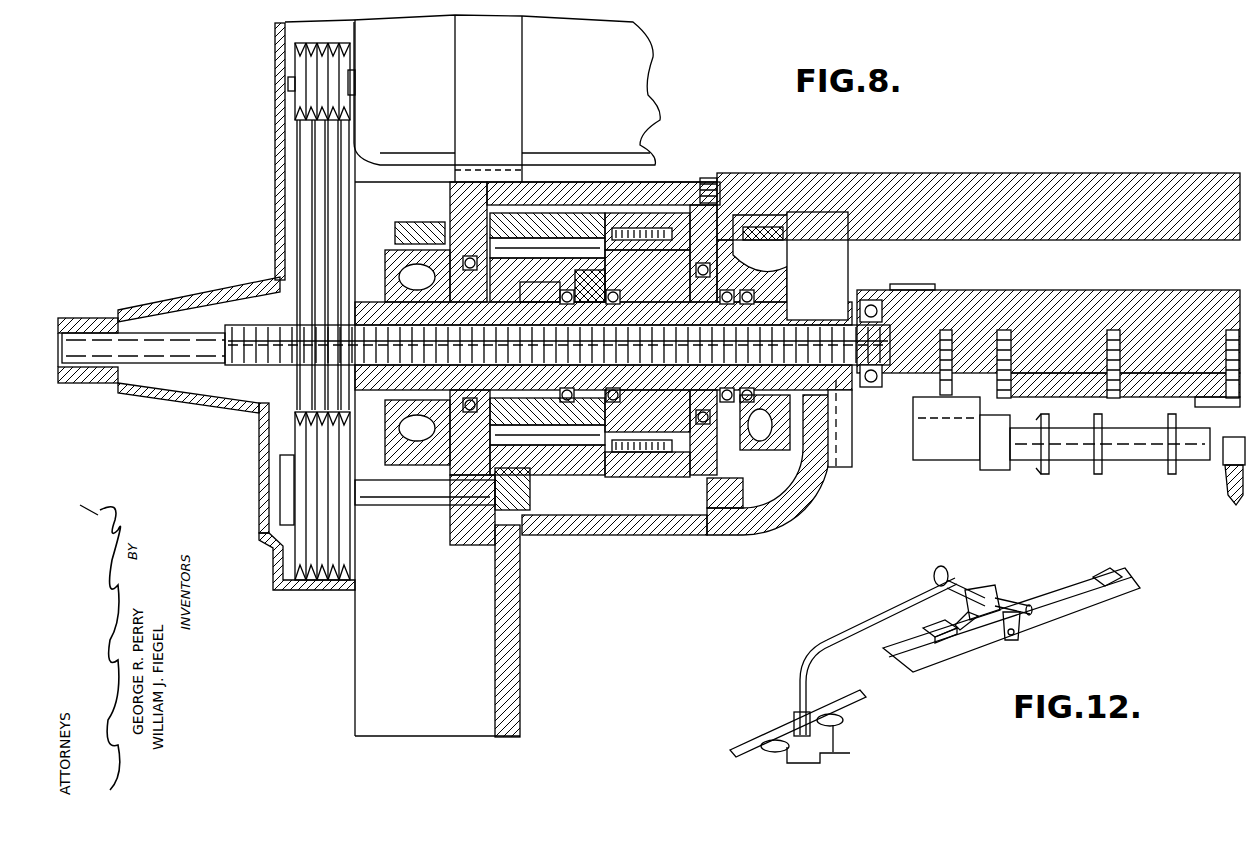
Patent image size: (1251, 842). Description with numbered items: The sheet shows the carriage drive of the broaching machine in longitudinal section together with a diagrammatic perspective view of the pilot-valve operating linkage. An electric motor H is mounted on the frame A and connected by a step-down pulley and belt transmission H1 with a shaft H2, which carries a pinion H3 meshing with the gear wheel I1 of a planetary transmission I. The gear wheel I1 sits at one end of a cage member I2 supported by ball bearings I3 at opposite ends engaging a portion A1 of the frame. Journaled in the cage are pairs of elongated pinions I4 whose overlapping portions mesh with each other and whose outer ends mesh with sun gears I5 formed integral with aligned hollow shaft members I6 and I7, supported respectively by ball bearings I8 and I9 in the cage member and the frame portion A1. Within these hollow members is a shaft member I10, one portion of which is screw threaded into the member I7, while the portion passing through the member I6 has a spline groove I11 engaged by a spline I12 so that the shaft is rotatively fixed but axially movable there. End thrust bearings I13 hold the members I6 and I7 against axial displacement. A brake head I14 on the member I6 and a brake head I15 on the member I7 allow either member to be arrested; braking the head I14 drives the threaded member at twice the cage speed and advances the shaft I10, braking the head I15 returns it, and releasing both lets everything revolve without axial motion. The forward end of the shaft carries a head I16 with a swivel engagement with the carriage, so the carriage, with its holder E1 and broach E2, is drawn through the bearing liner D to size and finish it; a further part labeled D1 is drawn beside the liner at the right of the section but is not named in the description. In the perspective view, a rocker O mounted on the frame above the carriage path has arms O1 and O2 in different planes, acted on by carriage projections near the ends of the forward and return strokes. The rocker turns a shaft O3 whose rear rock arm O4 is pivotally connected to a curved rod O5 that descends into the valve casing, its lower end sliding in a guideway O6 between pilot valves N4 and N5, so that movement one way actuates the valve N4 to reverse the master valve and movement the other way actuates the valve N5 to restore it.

In FIG. 8, the electric motor H is at (642, 92).
In FIG. 8, the step-down pulley and belt transmission H1 is at (284, 438).
In FIG. 8, the shaft H2 is at (420, 505).
In FIG. 8, the pinion H3 is at (532, 490).
In FIG. 8, the frame A is at (505, 735).
In FIG. 8, the frame portion A1 is at (466, 190).
In FIG. 8, the planetary transmission I is at (658, 205).
In FIG. 8, the gear wheel I1 is at (510, 212).
In FIG. 8, the cage member I2 is at (640, 222).
In FIG. 8, the ball bearings I3 is at (462, 258).
In FIG. 8, the elongated pinions I4 is at (570, 215).
In FIG. 8, the sun gears I5 is at (532, 250).
In FIG. 8, the hollow shaft member I6 is at (385, 272).
In FIG. 8, the hollow shaft member I7 is at (822, 318).
In FIG. 8, the ball bearings I8 is at (583, 326).
In FIG. 8, the ball bearings I9 is at (410, 285).
In FIG. 8, the shaft member I10 is at (766, 406).
In FIG. 8, the spline groove I11 is at (832, 422).
In FIG. 8, the spline I12 is at (528, 326).
In FIG. 8, the end thrust bearings I13 is at (760, 268).
In FIG. 8, the brake head I14 is at (415, 222).
In FIG. 8, the brake head I15 is at (772, 215).
In FIG. 8, the head I16 is at (875, 300).
In FIG. 8, the holder E1 is at (1210, 400).
In FIG. 8, the broach E2 is at (1118, 458).
In FIG. 8, the bearing liner D is at (1222, 466).
In FIG. 8, the dog tip D1 is at (1226, 496).
In FIG. 12, the rocker O is at (992, 585).
In FIG. 12, the arm O1 is at (1017, 600).
In FIG. 12, the arm O2 is at (960, 640).
In FIG. 12, the shaft O3 is at (958, 586).
In FIG. 12, the rock arm O4 is at (934, 577).
In FIG. 12, the curved rod O5 is at (855, 627).
In FIG. 12, the guideway O6 is at (760, 728).
In FIG. 12, the pilot valve N4 is at (776, 754).
In FIG. 12, the pilot valve N5 is at (846, 717).